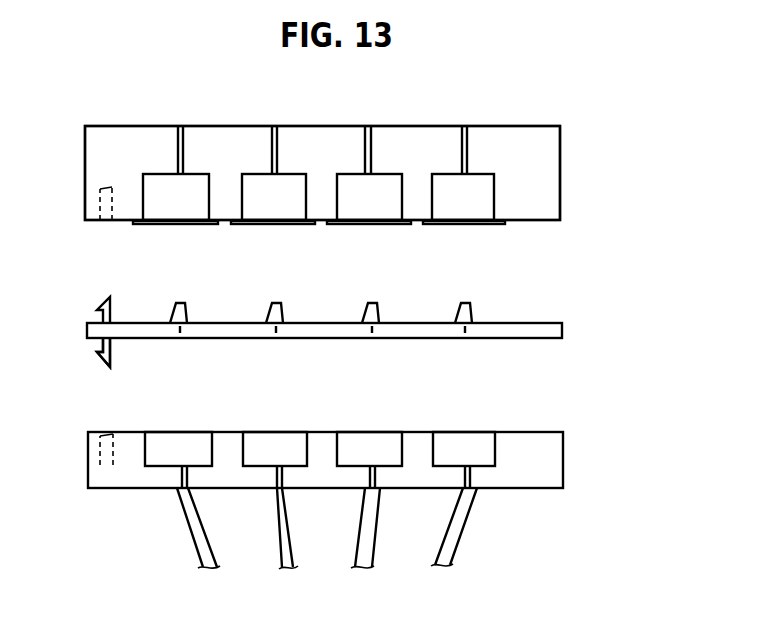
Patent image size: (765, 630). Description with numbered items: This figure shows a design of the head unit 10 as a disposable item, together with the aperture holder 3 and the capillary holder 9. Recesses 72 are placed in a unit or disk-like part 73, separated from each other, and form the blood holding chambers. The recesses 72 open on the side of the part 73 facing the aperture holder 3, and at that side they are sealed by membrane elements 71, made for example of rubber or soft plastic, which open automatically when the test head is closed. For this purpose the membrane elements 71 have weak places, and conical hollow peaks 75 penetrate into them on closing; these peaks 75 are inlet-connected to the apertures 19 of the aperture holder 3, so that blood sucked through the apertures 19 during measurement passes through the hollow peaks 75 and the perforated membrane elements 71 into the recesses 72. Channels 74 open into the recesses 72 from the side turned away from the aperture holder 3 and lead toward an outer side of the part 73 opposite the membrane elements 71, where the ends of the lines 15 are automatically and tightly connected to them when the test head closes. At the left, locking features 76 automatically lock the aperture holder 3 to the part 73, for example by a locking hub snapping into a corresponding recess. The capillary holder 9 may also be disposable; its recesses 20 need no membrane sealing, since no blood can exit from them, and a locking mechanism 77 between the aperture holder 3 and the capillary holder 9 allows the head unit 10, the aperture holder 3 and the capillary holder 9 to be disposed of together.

The aperture holder 3 is at (548, 330).
The capillary holder 9 is at (596, 455).
The head unit 10 is at (590, 157).
The connecting wires 15 is at (457, 533).
The apertures 19 is at (488, 358).
The recesses of the capillary holder 20 is at (320, 458).
The membrane elements 71 is at (500, 254).
The recesses 72 is at (318, 197).
The disk-like part 73 is at (552, 195).
The channels 74 is at (470, 140).
The conical hollow peaks 75 is at (472, 311).
The locking features 76 is at (98, 192).
The locking mechanism 77 is at (100, 358).